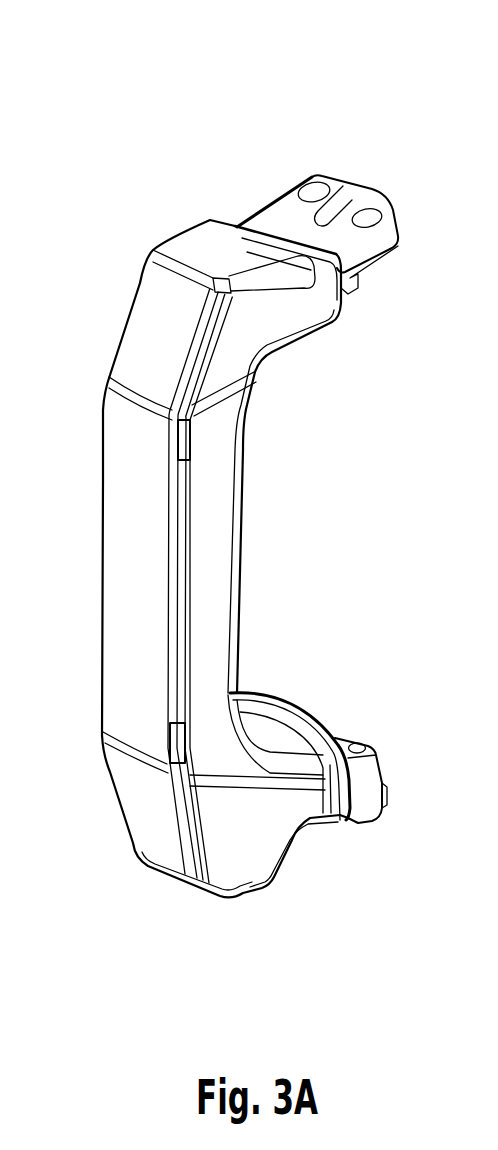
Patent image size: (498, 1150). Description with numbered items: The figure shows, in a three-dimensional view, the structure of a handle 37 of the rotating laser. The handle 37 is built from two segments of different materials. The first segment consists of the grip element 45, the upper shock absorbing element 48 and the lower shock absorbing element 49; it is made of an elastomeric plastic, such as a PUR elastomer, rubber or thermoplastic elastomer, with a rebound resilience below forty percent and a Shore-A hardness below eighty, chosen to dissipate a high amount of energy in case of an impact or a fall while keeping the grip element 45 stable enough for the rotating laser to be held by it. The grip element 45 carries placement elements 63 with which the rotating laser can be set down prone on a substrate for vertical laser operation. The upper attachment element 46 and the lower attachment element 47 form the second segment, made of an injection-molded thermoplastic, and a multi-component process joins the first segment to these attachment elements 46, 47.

The handle 37 is at (167, 109).
The grip element 45 is at (128, 555).
The upper attachment element 46 is at (342, 190).
The lower attachment element 47 is at (341, 733).
The upper shock absorbing element 48 is at (181, 232).
The lower shock absorbing element 49 is at (302, 852).
The placement element 63 is at (187, 437).